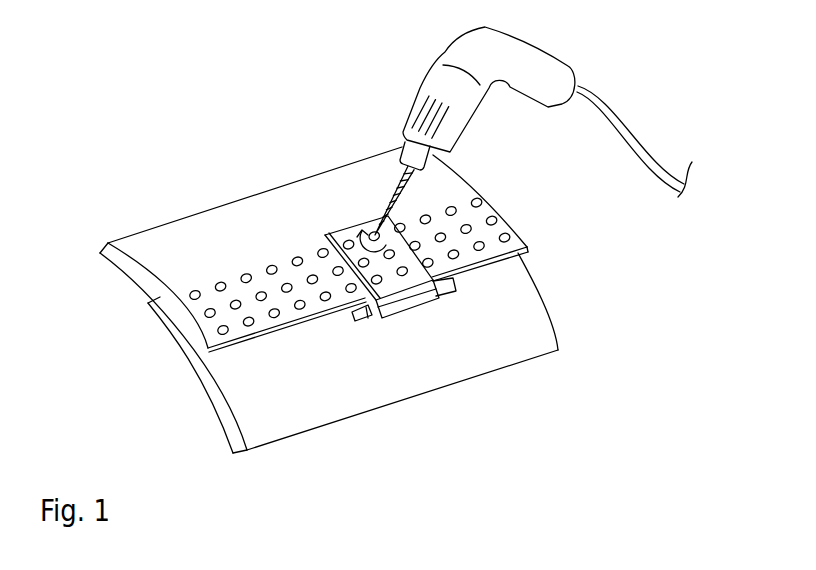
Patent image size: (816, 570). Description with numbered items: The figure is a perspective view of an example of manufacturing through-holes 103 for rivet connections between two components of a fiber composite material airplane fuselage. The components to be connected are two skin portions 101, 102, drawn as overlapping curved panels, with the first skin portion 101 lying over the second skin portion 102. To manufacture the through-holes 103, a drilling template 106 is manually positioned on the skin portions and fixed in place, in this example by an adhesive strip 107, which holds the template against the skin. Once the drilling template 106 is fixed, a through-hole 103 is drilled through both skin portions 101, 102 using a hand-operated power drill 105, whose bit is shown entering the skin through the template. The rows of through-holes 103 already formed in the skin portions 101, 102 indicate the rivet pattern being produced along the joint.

The skin portion 101 is at (162, 240).
The skin portion 102 is at (250, 399).
The through-holes 103 is at (297, 258).
The hand-operated power drill 105 is at (457, 53).
The drilling template 106 is at (418, 278).
The adhesive strip 107 is at (361, 321).